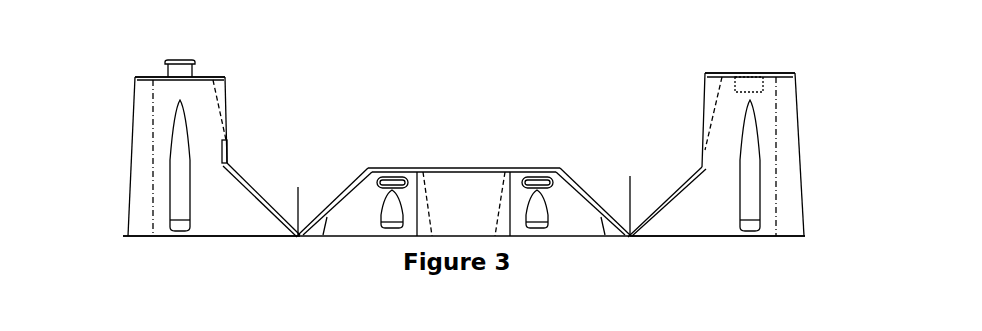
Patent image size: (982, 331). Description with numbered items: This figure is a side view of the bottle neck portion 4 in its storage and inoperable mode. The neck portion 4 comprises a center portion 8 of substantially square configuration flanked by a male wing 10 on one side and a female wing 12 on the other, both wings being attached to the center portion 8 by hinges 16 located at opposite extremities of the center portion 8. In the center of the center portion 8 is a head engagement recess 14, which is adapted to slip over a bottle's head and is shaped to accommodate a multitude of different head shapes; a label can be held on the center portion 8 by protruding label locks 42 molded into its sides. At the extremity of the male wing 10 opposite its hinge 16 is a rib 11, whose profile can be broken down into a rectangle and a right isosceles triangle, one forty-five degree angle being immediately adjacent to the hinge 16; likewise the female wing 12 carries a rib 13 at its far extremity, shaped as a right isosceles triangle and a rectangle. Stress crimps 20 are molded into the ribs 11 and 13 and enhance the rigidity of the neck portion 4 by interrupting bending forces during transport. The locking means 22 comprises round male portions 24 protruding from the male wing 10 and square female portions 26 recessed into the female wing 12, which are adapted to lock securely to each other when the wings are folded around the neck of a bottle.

The neck portion 4 is at (547, 141).
The center portion 8 is at (380, 169).
The male wing 10 is at (178, 237).
The rib 11 is at (130, 172).
The female wing 12 is at (697, 237).
The rib 13 is at (797, 152).
The head engagement recess 14 is at (480, 197).
The hinge 16 is at (463, 197).
The stress crimp 20 is at (178, 202).
The locking means 22 is at (729, 70).
The male portion 24 is at (168, 60).
The female portion 26 is at (757, 80).
The label lock 42 is at (537, 180).